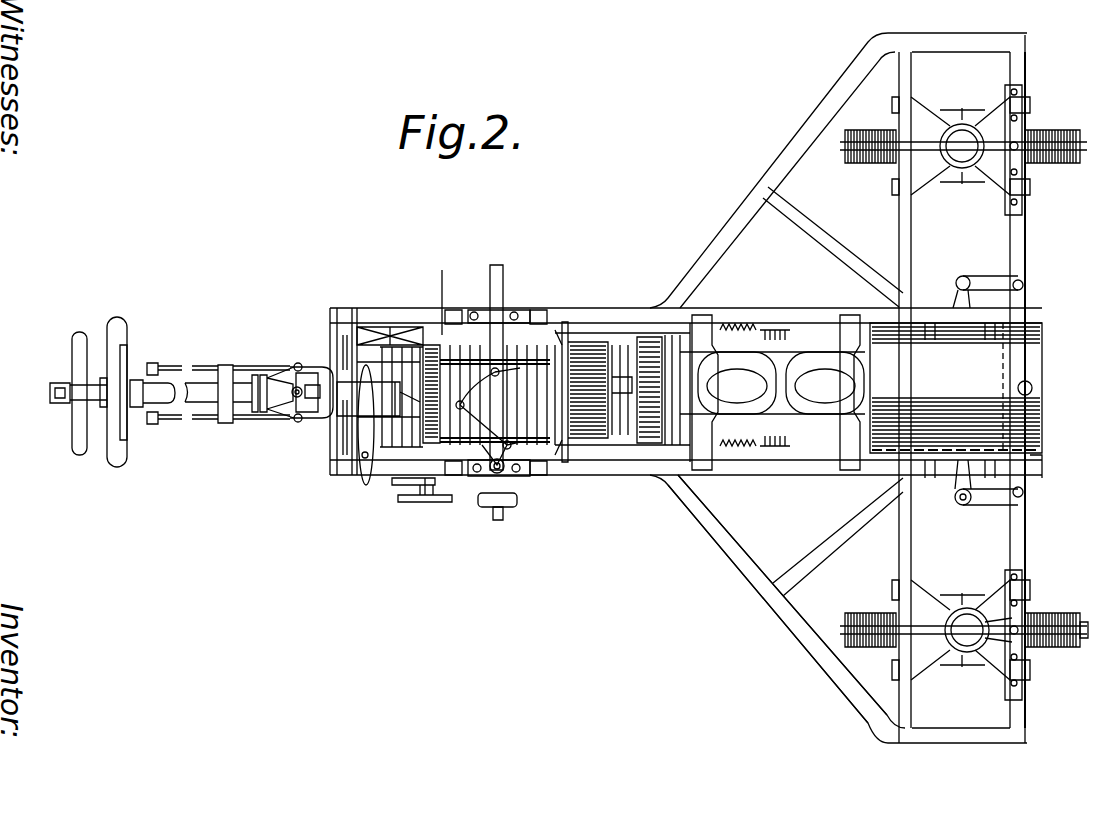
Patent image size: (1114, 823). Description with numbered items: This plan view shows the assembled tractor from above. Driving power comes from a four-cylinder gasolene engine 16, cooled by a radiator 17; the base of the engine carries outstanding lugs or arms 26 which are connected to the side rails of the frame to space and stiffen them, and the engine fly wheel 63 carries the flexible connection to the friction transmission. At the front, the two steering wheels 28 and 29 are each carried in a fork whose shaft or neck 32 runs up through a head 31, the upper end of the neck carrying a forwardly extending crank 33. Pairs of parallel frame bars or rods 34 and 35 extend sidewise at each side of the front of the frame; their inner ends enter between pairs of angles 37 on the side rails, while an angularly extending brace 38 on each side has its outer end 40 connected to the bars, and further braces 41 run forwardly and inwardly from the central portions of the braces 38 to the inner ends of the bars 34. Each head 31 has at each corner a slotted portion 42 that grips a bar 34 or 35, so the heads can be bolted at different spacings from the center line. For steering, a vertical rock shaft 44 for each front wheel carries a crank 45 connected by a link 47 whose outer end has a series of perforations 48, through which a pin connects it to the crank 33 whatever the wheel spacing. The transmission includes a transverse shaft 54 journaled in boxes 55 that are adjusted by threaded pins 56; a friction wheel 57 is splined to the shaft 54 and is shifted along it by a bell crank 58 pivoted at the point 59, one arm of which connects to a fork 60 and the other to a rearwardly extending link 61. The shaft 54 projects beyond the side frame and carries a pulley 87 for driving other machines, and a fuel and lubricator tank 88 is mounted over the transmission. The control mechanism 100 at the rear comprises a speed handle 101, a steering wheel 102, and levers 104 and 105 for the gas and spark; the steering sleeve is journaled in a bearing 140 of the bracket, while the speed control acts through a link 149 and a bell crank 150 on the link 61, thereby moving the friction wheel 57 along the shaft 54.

The gasolene engine 16 is at (798, 362).
The radiator 17 is at (1031, 362).
The lugs or arms 26 is at (858, 465).
The front wheel 28 is at (1070, 163).
The front wheel 29 is at (1072, 615).
The head 31 is at (930, 605).
The shaft or neck 32 is at (960, 637).
The crank 33 is at (997, 640).
The frame bar or rod 34 is at (913, 737).
The frame bar or rod 35 is at (1028, 738).
The angles 37 is at (1035, 472).
The brace 38 is at (793, 632).
The outer end of brace 40 is at (887, 730).
The brace 41 is at (817, 562).
The slotted portion 42 is at (905, 595).
The rock shaft 44 is at (967, 506).
The crank 45 is at (997, 500).
The link 47 is at (1015, 558).
The perforations 48 is at (1030, 653).
The shaft 54 is at (497, 272).
The box 55 is at (528, 500).
The threaded pin 56 is at (460, 310).
The friction wheel 57 is at (442, 335).
The bell crank 58 is at (487, 470).
The pivot point 59 is at (492, 478).
The fork 60 is at (453, 363).
The link 61 is at (470, 470).
The fly wheel 63 is at (650, 413).
The pulley 87 is at (500, 513).
The fuel and lubricator tank 88 is at (593, 368).
The control mechanism 100 is at (101, 459).
The handle 101 is at (50, 403).
The steering wheel 102 is at (78, 443).
The lever 104 is at (147, 422).
The lever 105 is at (143, 370).
The bearing 140 is at (347, 385).
The link 149 is at (357, 430).
The bell crank 150 is at (420, 433).